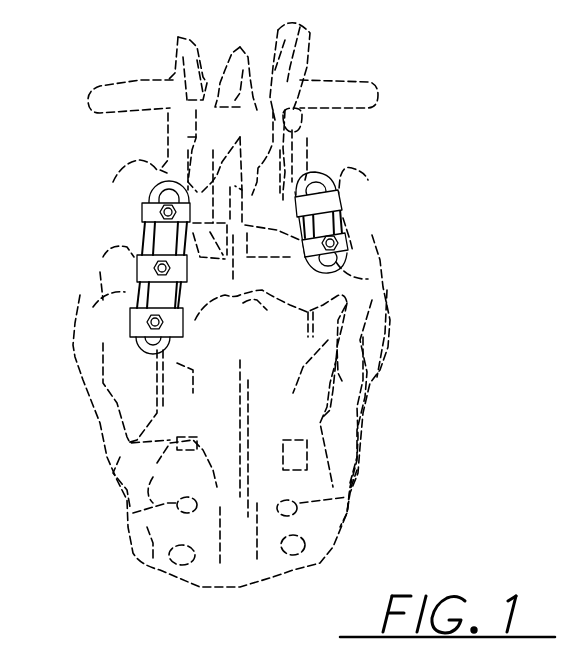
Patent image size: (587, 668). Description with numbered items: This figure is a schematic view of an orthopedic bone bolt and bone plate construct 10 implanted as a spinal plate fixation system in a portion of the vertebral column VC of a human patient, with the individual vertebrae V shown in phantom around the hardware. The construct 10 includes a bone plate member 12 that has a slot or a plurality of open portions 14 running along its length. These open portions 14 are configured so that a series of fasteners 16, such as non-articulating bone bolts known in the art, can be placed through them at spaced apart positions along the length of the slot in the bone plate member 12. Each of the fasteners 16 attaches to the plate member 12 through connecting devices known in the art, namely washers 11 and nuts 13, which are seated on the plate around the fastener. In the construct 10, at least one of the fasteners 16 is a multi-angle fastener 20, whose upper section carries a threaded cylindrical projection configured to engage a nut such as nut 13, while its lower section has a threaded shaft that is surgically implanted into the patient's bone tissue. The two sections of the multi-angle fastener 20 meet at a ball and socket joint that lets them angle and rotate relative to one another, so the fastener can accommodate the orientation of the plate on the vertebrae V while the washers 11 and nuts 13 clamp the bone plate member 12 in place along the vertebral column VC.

The orthopedic bone bolt and bone plate construct 10 is at (130, 227).
The washer 11 is at (343, 201).
The bone plate member 12 is at (162, 182).
The nut 13 is at (338, 229).
The open portions 14 is at (170, 236).
The fasteners 16 is at (158, 208).
The multi-angle fastener 20 is at (338, 246).
The vertebra V is at (100, 272).
The vertebral column VC is at (252, 58).